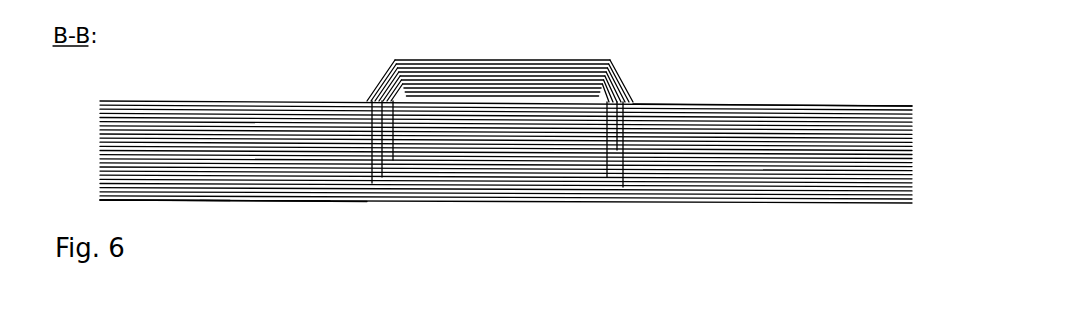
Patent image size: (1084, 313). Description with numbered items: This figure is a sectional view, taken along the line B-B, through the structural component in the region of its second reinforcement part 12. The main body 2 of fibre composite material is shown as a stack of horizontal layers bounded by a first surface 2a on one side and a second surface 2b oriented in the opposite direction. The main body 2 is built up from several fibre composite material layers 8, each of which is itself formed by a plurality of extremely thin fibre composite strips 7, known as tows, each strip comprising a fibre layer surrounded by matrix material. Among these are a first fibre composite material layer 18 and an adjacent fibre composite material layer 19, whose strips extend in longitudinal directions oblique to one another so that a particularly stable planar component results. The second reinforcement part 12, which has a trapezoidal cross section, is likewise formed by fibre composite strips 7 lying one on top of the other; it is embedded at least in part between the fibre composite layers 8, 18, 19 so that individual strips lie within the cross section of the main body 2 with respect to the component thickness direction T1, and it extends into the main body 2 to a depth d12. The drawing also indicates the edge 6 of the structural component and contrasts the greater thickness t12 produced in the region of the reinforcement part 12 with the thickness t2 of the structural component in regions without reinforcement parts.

The main body 2 is at (868, 97).
The first surface 2a is at (310, 207).
The second surface 2b is at (822, 102).
The edge 6 is at (781, 93).
The fibre composite strip 7 is at (437, 60).
The fibre composite material layer 8 is at (100, 116).
The second reinforcement part 12 is at (580, 43).
The first fibre composite material layer 18 is at (148, 200).
The fibre composite material layer 19 is at (218, 200).
The component thickness direction T1 is at (235, 102).
The depth d12 is at (362, 173).
The thickness in region of reinforcement parts t12 is at (542, 205).
The thickness of structural component t2 is at (782, 205).